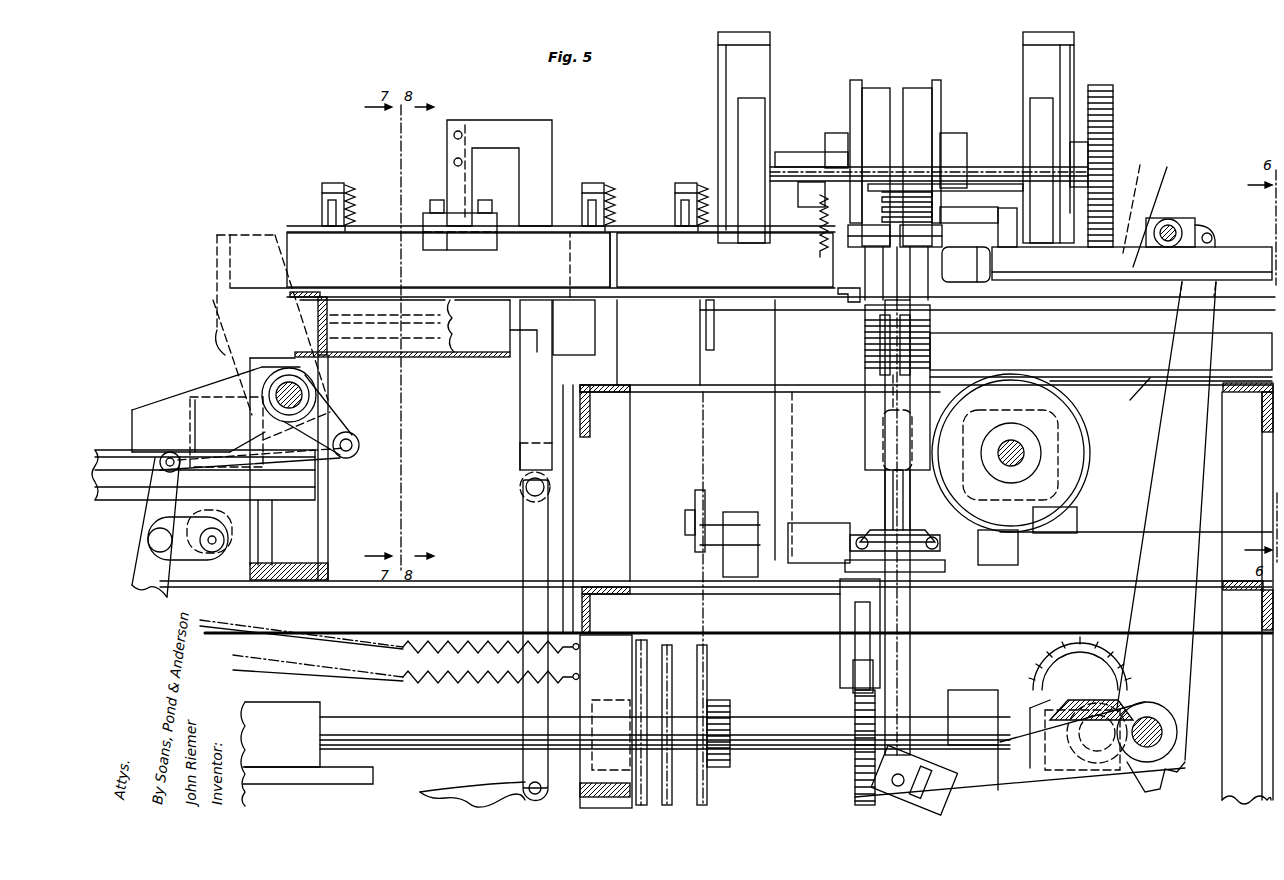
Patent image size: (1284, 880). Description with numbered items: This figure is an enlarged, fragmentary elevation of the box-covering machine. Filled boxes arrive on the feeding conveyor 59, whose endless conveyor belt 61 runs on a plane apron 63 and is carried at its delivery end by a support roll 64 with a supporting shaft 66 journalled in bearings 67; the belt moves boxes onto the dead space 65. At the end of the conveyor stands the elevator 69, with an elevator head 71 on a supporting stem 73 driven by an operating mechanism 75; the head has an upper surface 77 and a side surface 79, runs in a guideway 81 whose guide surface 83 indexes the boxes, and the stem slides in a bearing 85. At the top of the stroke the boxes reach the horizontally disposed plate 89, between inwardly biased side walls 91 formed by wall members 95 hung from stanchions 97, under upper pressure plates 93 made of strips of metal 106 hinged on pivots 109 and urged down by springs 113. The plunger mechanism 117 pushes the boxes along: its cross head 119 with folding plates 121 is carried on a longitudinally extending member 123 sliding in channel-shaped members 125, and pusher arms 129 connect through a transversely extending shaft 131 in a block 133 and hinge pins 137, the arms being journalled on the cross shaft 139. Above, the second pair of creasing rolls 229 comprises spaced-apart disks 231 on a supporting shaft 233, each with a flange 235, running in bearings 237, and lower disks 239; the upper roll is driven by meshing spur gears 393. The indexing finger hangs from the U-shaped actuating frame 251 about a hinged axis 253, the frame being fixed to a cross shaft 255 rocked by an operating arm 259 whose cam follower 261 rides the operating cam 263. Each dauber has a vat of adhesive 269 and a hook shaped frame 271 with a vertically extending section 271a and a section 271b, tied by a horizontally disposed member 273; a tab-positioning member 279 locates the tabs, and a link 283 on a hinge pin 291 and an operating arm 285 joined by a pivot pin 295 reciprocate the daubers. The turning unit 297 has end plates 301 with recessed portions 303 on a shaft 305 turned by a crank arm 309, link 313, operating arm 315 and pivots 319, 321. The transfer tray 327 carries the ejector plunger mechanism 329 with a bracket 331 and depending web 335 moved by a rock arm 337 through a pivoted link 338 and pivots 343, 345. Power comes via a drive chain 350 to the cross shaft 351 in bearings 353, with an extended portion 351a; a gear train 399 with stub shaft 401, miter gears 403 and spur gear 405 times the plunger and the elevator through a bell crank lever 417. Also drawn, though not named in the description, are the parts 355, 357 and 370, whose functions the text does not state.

The feeding conveyor 59 is at (1140, 383).
The endless conveyor belt 61 is at (1108, 381).
The plane apron 63 is at (1158, 403).
The support roll 64 is at (1081, 510).
The dead space 65 is at (955, 390).
The supporting shaft 66 is at (1030, 468).
The bearings 67 is at (1056, 445).
The elevator 69 is at (878, 455).
The elevator head 71 is at (865, 430).
The supporting stem 73 is at (905, 658).
The operating mechanism 75 is at (1015, 710).
The upper horizontally disposed surface 77 is at (890, 373).
The side surface 79 is at (943, 398).
The guideway 81 is at (882, 355).
The guide surface 83 is at (865, 337).
The bearing 85 is at (872, 525).
The horizontally disposed plate 89 is at (838, 288).
The side walls 91 is at (656, 280).
The upper pressure plates 93 is at (565, 222).
The wall members 95 is at (574, 327).
The stanchions 97 is at (334, 185).
The strips of metal 106 is at (395, 230).
The pivots 109 is at (321, 206).
The springs 113 is at (352, 195).
The plunger mechanism 117 is at (1220, 480).
The cross head 119 is at (1010, 262).
The folding plate 121 is at (998, 235).
The longitudinally extending member 123 is at (1139, 200).
The channel-shaped members 125 is at (1161, 207).
The pusher arms 129 is at (1192, 455).
The transversely extending shaft 131 is at (1192, 218).
The block 133 is at (1170, 210).
The hinge pins 137 is at (1215, 238).
The cross shaft 139 is at (1160, 725).
The second pair of creasing rolls 229 is at (902, 72).
The spaced-apart disks 231 is at (876, 95).
The supporting shaft 233 is at (800, 160).
The flange 235 is at (945, 120).
The bearings 237 is at (750, 115).
The disks 239 is at (966, 264).
The U-shaped actuating frame 251 is at (773, 440).
The hinged axis 253 is at (945, 203).
The cross shaft 255 is at (760, 515).
The operating arm 259 is at (850, 645).
The cam follower 261 is at (852, 692).
The operating cam 263 is at (982, 228).
The vat of adhesive 269 is at (432, 353).
The hook shaped frame 271 is at (555, 158).
The vertically extending section 271a is at (518, 407).
The frame section 271b is at (447, 186).
The horizontally disposed member 273 is at (515, 460).
The tab-positioning member 279 is at (490, 215).
The link 283 is at (528, 543).
The operating arm 285 is at (450, 787).
The hinge pin 291 is at (525, 488).
The pivot pin 295 is at (528, 780).
The turning unit 297 is at (196, 284).
The end plates 301 is at (222, 325).
The recessed portion 303 is at (268, 232).
The shaft 305 is at (300, 392).
The crank arm 309 is at (330, 425).
The link 313 is at (322, 460).
The operating arm 315 is at (150, 515).
The pivot 319 is at (360, 444).
The pivot 321 is at (160, 470).
The transfer tray 327 is at (108, 448).
The ejector plunger mechanism 329 is at (165, 405).
The bracket 331 is at (260, 432).
The depending web 335 is at (233, 510).
The rock arm 337 is at (216, 587).
The pivoted link 338 is at (278, 548).
The pivot 343 is at (233, 538).
The pivot 345 is at (175, 555).
The drive chain 350 is at (700, 416).
The cross shaft 351 is at (765, 700).
The extended portion 351a is at (430, 690).
The bearings 353 is at (610, 700).
The spring 355 is at (636, 645).
The pin 357 is at (704, 342).
The bolt 370 is at (698, 494).
The meshing spur gears 393 is at (1108, 158).
The gear train 399 is at (1090, 645).
The stub shaft 401 is at (1127, 770).
The miter gears 403 is at (1070, 702).
The spur gear 405 is at (1060, 665).
The bell crank lever 417 is at (1160, 735).